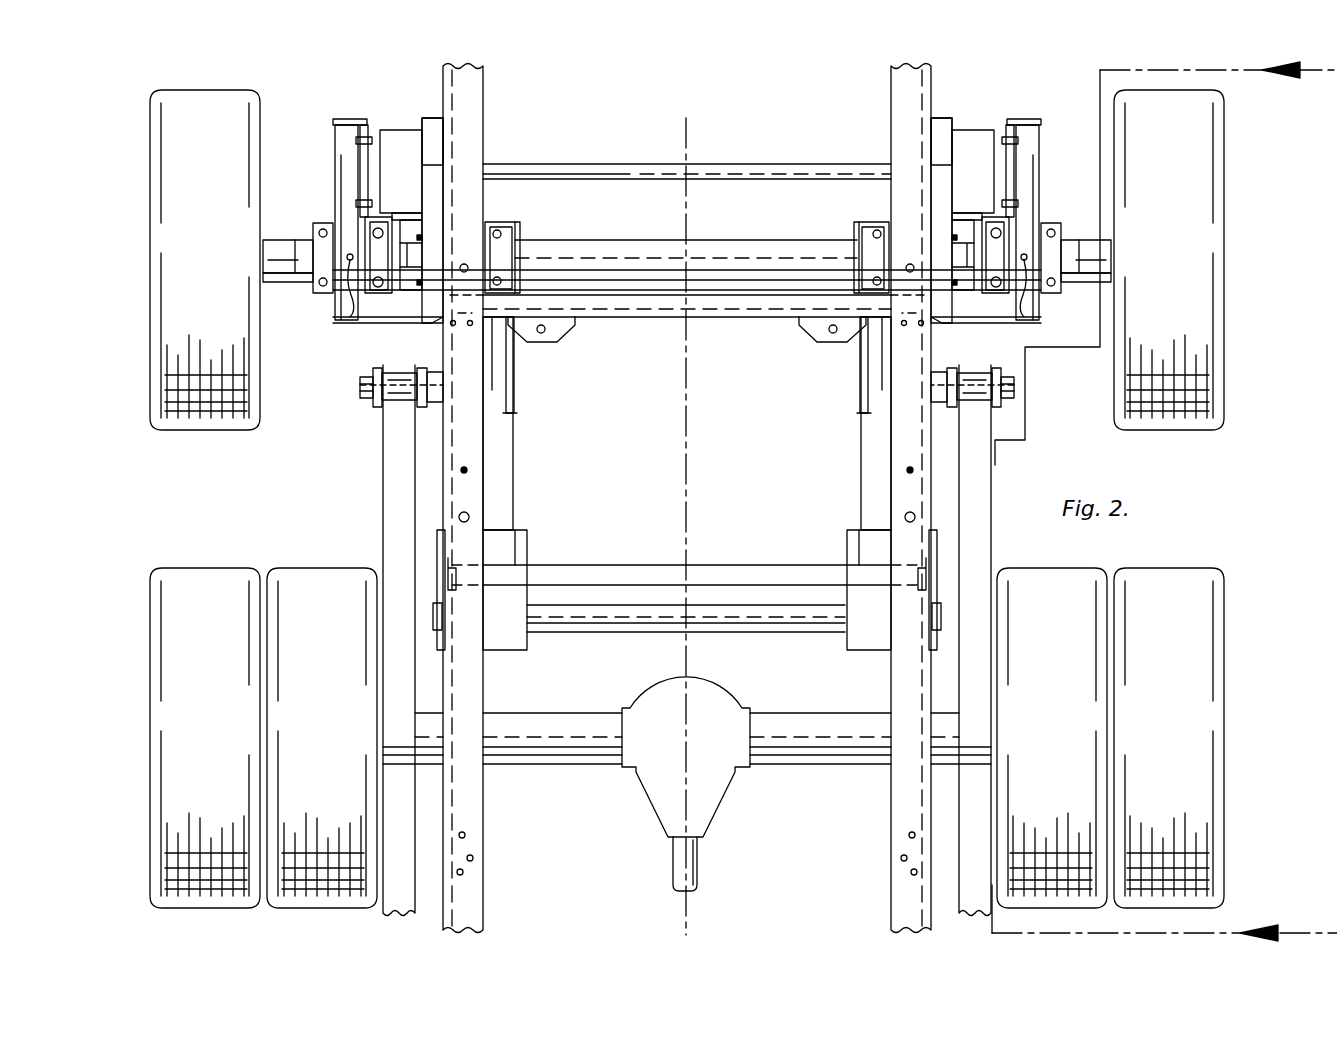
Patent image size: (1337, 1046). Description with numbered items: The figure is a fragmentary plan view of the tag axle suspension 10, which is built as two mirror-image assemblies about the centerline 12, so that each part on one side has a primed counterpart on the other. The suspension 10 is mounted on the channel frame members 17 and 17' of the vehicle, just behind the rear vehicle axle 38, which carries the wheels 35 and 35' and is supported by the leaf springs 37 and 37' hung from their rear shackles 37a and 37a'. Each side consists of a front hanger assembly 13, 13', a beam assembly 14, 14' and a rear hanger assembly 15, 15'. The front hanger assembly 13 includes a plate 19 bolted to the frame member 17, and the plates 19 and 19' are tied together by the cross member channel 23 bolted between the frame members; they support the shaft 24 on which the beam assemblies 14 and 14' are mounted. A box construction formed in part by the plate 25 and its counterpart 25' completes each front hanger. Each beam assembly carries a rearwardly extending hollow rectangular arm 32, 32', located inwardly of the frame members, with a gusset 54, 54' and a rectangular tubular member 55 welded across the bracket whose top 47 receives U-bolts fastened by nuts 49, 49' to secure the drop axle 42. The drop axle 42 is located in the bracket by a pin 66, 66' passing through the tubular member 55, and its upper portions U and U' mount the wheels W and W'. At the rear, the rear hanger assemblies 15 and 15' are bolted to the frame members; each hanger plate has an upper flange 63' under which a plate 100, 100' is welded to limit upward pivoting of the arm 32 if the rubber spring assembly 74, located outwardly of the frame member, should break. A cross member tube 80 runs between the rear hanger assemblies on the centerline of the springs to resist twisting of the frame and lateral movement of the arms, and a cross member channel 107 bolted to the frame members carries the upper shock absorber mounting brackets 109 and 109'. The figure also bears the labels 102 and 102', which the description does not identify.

The tag axle suspension 10 is at (755, 162).
The centerline 12 is at (693, 123).
The front hanger assembly 13 is at (849, 568).
The front hanger assembly 13' is at (527, 572).
The beam assembly 14 is at (836, 371).
The beam assembly 14' is at (532, 365).
The rear hanger assembly 15 is at (957, 194).
The rear hanger assembly 15' is at (483, 210).
The channel frame member 17 is at (881, 498).
The channel frame member 17' is at (490, 498).
The plate 19 is at (971, 587).
The plate 19' is at (395, 584).
The cross member channel 23 is at (737, 570).
The shaft 24 is at (763, 620).
The plate 25 is at (830, 547).
The plate 25' is at (551, 547).
The rearwardly extending arm 32 is at (852, 423).
The rearwardly extending arm 32' is at (532, 423).
The wheel 35 is at (1136, 718).
The wheel 35' is at (256, 718).
The leaf spring 37 is at (996, 640).
The leaf spring 37' is at (369, 640).
The rear shackle 37a is at (1045, 410).
The rear shackle 37a' is at (337, 402).
The rear vehicle axle 38 is at (795, 747).
The drop axle 42 is at (750, 255).
The top of bracket 47 is at (400, 220).
The nut 49 is at (939, 239).
The nut 49' is at (420, 265).
The gusset 54 is at (900, 383).
The gusset 54' is at (383, 381).
The rectangular tubular member 55 is at (348, 175).
The upper flange 63' is at (687, 141).
The pin 66 is at (1007, 290).
The pin 66' is at (372, 303).
The rubber spring assembly 74 is at (360, 152).
The cross member tube 80 is at (628, 163).
The plate 100 is at (997, 146).
The plate 100' is at (390, 143).
The bearing housing 102 is at (898, 237).
The bearing housing 102' is at (467, 237).
The cross member channel 107 is at (633, 306).
The upper shock absorber mounting bracket 109 is at (806, 336).
The upper shock absorber mounting bracket 109' is at (551, 342).
The upper portion of drop axle U is at (1114, 250).
The upper portion of drop axle U' is at (256, 256).
The wheel W is at (1200, 260).
The wheel W' is at (165, 260).